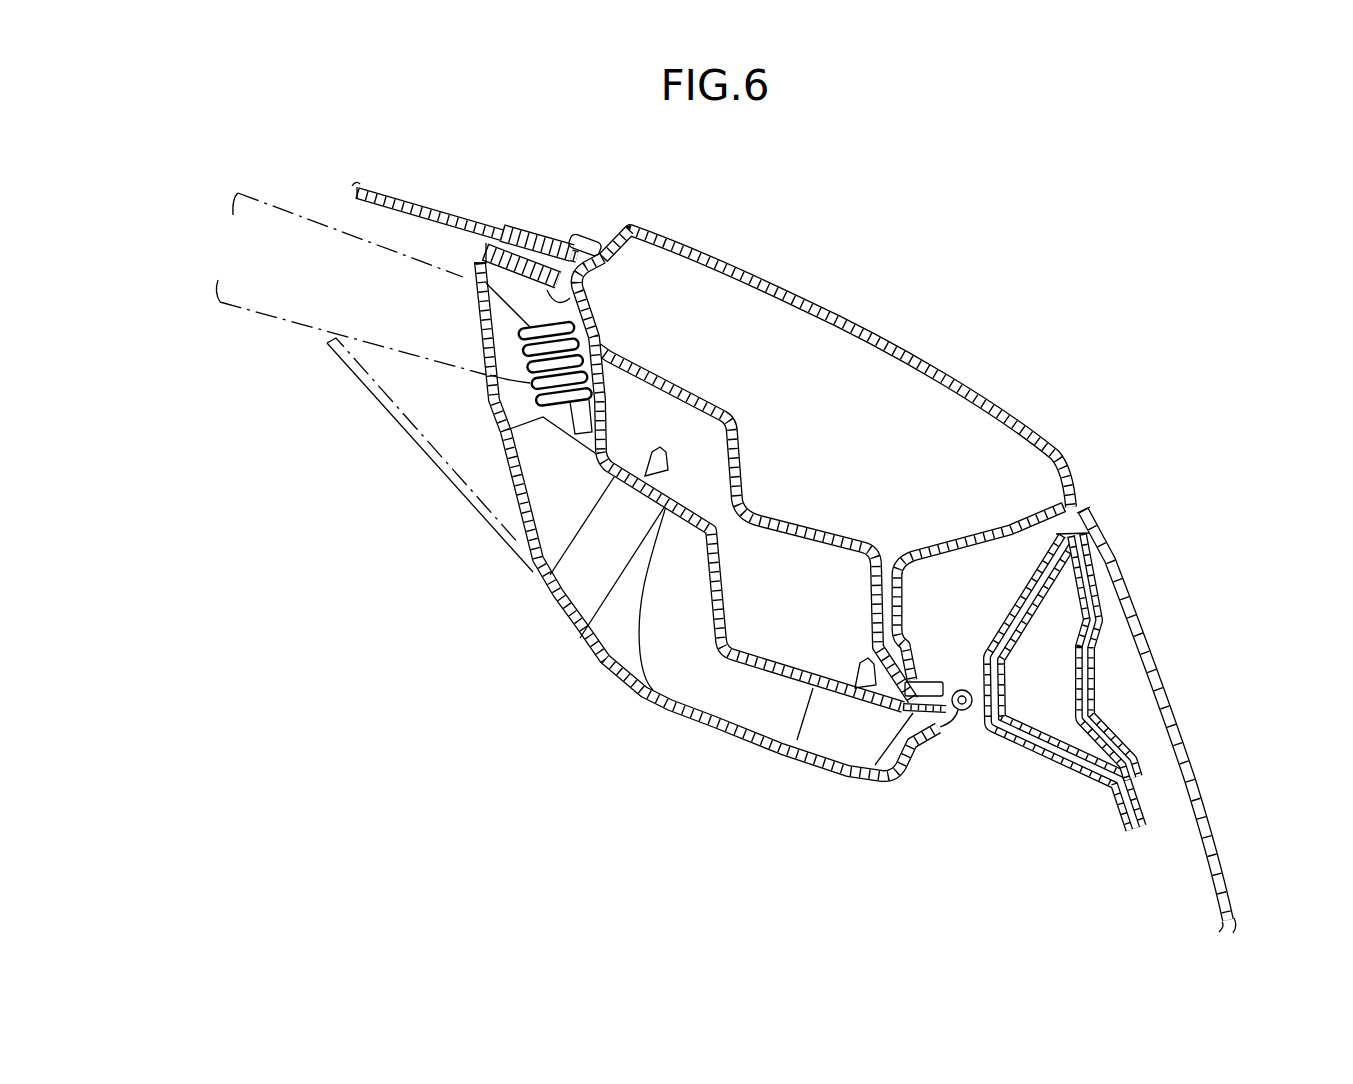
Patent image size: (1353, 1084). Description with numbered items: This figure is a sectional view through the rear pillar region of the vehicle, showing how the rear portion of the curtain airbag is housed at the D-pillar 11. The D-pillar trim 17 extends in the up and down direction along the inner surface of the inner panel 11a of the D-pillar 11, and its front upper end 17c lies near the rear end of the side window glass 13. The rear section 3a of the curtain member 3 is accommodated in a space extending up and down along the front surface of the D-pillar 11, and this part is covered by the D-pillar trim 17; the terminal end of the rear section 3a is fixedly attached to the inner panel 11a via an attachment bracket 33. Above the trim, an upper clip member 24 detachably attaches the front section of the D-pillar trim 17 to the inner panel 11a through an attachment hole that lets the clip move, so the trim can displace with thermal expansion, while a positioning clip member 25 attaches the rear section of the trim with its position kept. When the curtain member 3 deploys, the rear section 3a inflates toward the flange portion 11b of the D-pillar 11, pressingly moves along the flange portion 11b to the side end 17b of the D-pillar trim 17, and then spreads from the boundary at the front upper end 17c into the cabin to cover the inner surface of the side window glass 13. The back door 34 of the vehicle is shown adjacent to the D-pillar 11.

The curtain member 3 is at (240, 305).
The rear section of the curtain member 3a is at (523, 363).
The D-pillar 11 is at (911, 350).
The inner panel of the D-pillar 11a is at (721, 656).
The flange portion of the D-pillar 11b is at (602, 305).
The side window glass 13 is at (417, 199).
The D-pillar trim 17 is at (593, 658).
The side end of the D-pillar trim 17b is at (475, 262).
The front upper end of the D-pillar trim 17c is at (330, 346).
The upper clip member 24 is at (657, 453).
The positioning clip member 25 is at (860, 662).
The attachment bracket 33 is at (550, 423).
The back door 34 is at (1183, 724).